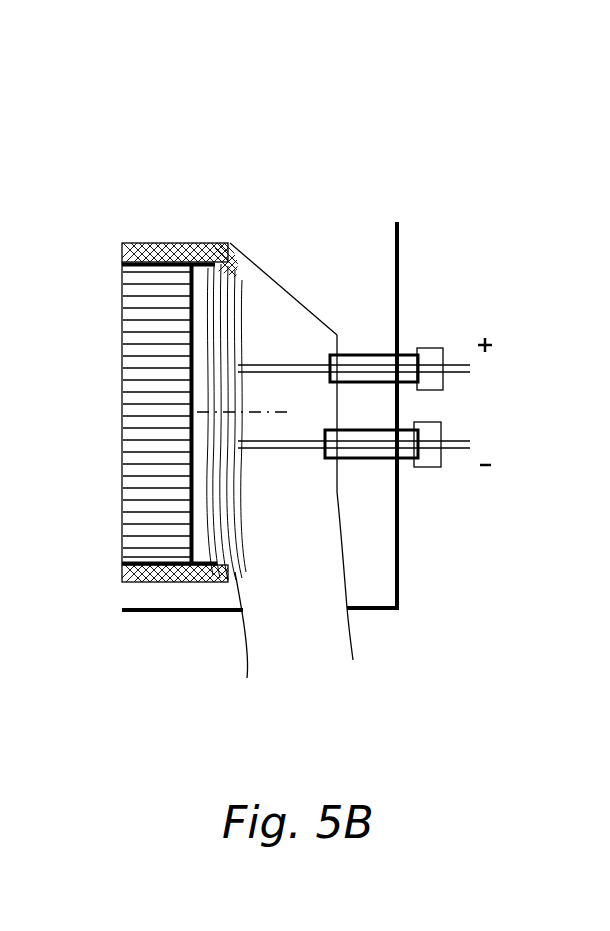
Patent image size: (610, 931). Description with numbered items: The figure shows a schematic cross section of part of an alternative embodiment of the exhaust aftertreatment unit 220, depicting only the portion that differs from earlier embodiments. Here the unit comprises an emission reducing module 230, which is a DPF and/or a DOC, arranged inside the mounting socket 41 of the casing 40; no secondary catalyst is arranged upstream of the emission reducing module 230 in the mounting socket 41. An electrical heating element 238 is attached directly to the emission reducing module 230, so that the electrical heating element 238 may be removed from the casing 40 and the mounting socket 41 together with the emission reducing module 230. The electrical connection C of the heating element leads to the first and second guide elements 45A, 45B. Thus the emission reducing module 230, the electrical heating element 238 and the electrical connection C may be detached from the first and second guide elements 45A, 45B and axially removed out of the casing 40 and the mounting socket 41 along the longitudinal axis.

The exhaust aftertreatment unit 220 is at (390, 150).
The mounting socket 41 is at (158, 243).
The emission reducing module 230 is at (128, 568).
The casing 40 is at (185, 612).
The electrical heating element 238 is at (235, 565).
The first guide element 45A is at (436, 347).
The second guide element 45B is at (440, 468).
The electrical connection C is at (290, 456).